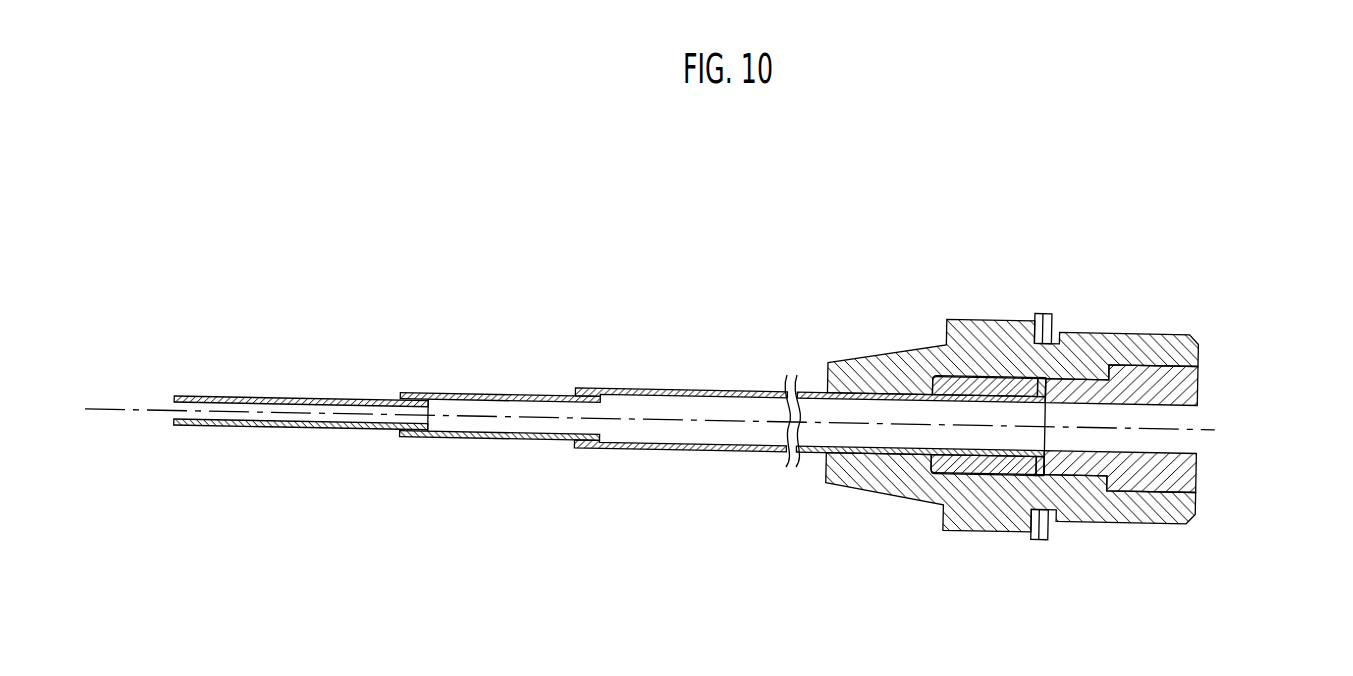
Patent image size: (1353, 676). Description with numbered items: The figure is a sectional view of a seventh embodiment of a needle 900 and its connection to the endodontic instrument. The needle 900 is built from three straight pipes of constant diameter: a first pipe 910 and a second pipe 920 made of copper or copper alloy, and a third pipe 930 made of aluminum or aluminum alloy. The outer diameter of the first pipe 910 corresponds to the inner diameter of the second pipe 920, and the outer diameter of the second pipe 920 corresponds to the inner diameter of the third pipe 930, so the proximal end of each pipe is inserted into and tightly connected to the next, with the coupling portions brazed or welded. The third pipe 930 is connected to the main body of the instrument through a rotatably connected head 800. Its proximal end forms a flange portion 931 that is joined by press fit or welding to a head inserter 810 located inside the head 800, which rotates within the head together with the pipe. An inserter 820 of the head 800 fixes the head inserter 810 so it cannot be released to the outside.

The head 800 is at (1062, 295).
The head inserter 810 is at (981, 392).
The inserter 820 is at (1183, 391).
The needle 900 is at (438, 378).
The first pipe 910 is at (264, 399).
The second pipe 920 is at (527, 398).
The third pipe 930 is at (704, 396).
The flange portion 931 is at (1038, 392).